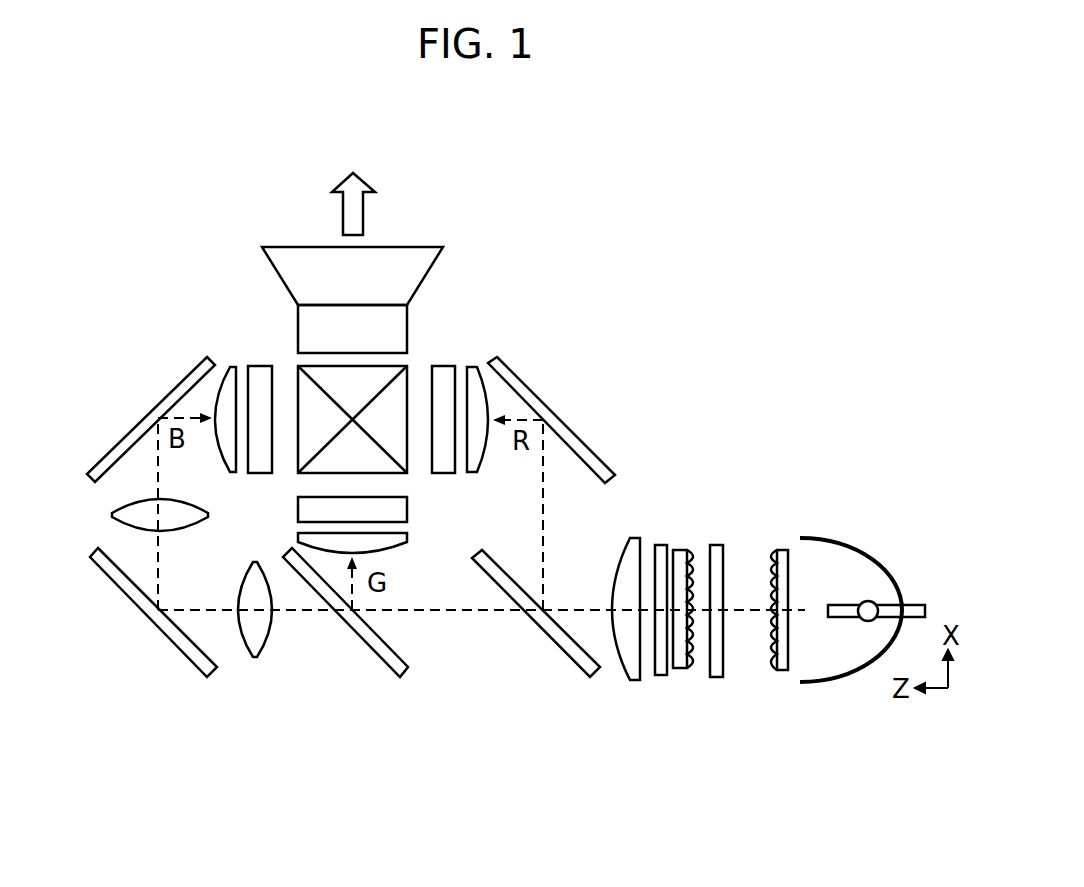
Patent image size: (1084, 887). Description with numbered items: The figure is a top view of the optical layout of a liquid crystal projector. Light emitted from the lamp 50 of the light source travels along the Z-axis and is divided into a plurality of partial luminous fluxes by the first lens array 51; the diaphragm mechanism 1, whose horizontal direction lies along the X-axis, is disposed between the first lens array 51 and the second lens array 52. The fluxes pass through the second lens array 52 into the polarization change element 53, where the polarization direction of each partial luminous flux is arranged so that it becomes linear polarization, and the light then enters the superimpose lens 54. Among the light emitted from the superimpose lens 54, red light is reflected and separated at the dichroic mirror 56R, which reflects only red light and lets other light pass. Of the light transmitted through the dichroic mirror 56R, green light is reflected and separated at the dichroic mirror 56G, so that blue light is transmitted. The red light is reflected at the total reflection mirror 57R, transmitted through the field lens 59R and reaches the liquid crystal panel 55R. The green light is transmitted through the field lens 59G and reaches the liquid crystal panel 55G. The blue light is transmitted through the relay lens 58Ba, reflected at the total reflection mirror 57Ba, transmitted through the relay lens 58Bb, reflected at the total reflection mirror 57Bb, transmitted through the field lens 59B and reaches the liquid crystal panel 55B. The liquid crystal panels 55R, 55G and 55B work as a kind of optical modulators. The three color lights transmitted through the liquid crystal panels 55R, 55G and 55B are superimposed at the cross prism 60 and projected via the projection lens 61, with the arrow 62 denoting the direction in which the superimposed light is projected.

The diaphragm mechanism 1 is at (715, 677).
The lamp 50 is at (843, 678).
The first lens array 51 is at (782, 670).
The second lens array 52 is at (678, 673).
The polarization change element 53 is at (662, 677).
The superimpose lens 54 is at (617, 677).
The liquid crystal panel 55R is at (441, 366).
The liquid crystal panel 55G is at (408, 510).
The liquid crystal panel 55B is at (260, 366).
The dichroic mirror 56R is at (552, 640).
The dichroic mirror 56G is at (358, 633).
The total reflection mirror 57R is at (530, 387).
The total reflection mirror 57Ba is at (175, 643).
The total reflection mirror 57Bb is at (125, 435).
The relay lens 58Ba is at (247, 657).
The relay lens 58Bb is at (112, 526).
The field lens 59R is at (478, 364).
The field lens 59G is at (408, 532).
The field lens 59B is at (226, 365).
The cross prism 60 is at (405, 368).
The projection lens 61 is at (310, 247).
The arrow 62 is at (367, 183).